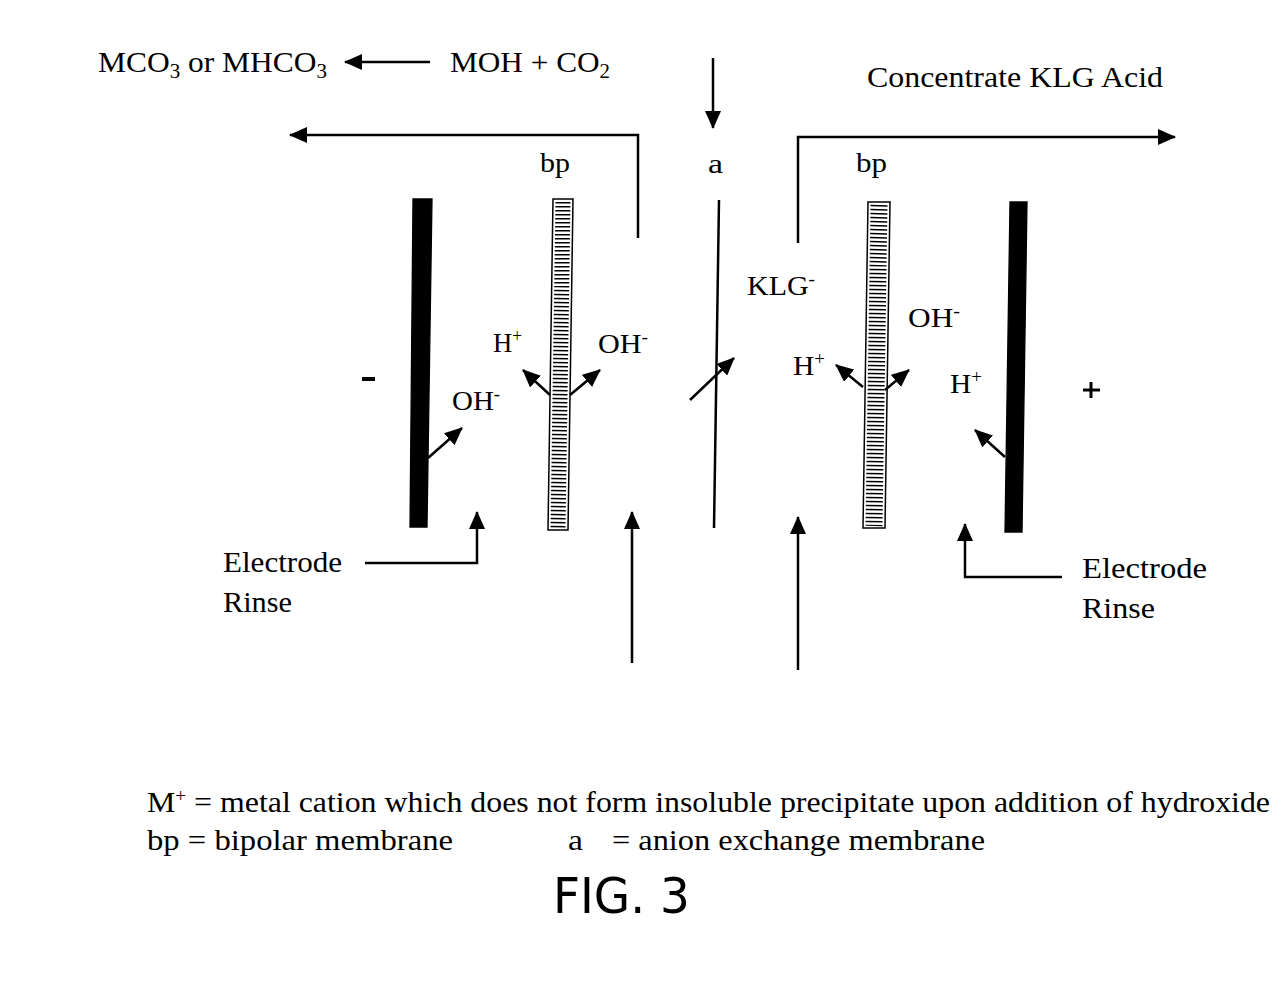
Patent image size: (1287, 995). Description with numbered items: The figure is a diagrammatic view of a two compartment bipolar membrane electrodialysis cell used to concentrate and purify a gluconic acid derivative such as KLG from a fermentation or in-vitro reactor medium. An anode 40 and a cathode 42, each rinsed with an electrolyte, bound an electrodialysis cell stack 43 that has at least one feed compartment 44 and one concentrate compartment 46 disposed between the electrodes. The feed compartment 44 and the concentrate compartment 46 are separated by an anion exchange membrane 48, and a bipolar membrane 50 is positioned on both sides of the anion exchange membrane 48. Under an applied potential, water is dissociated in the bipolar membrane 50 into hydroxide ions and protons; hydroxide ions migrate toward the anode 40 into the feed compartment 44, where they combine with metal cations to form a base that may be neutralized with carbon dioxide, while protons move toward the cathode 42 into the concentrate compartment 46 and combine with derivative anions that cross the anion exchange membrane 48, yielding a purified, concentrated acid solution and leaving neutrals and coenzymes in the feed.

The anode 40 is at (1028, 283).
The cathode 42 is at (408, 273).
The electrodialysis cell stack 43 is at (715, 79).
The feed compartment 44 is at (609, 611).
The concentrate compartment 46 is at (807, 588).
The anion exchange membrane 48 is at (723, 243).
The bipolar membrane 50 is at (573, 320).